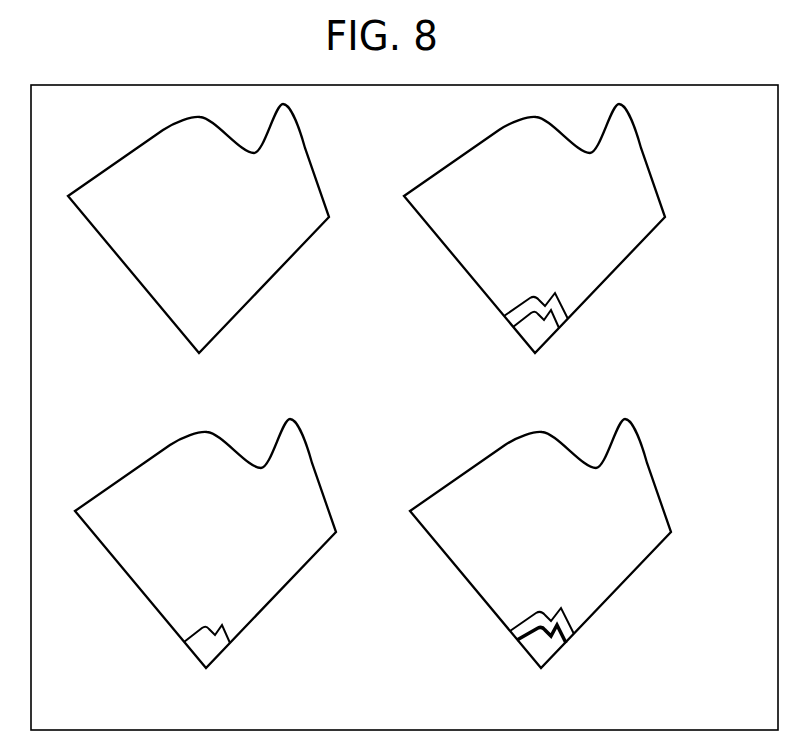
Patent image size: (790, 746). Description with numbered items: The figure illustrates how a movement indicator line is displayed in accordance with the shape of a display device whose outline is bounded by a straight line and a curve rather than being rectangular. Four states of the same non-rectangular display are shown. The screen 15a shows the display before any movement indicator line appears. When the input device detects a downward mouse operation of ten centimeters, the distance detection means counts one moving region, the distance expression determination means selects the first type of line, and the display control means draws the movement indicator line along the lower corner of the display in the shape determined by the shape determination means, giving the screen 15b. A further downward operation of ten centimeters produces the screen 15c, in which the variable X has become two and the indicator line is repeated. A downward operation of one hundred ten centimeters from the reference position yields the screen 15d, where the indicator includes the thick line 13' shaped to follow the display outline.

The screen 15a is at (313, 168).
The screen 15b is at (312, 457).
The screen 15c is at (640, 143).
The screen 15d is at (647, 457).
The thick line 13' is at (551, 666).